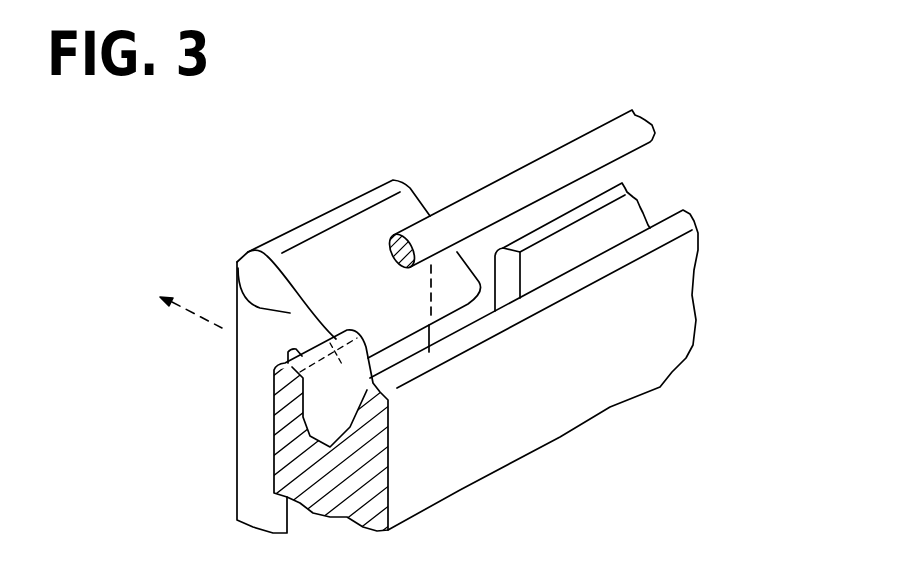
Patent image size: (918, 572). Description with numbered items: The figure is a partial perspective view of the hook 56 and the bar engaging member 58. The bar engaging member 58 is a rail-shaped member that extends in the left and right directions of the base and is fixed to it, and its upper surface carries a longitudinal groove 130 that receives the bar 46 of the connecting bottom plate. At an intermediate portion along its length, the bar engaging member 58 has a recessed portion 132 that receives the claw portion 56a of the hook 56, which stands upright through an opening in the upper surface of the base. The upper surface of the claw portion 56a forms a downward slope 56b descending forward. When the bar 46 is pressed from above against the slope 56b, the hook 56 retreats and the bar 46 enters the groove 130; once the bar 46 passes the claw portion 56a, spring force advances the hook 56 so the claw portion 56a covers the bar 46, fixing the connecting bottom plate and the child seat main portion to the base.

The bar 46 is at (590, 147).
The hook 56 is at (310, 240).
The claw portion 56a is at (237, 272).
The downward slope 56b is at (422, 204).
The bar engaging member 58 is at (537, 423).
The groove 130 is at (325, 413).
The recessed portion 132 is at (510, 273).